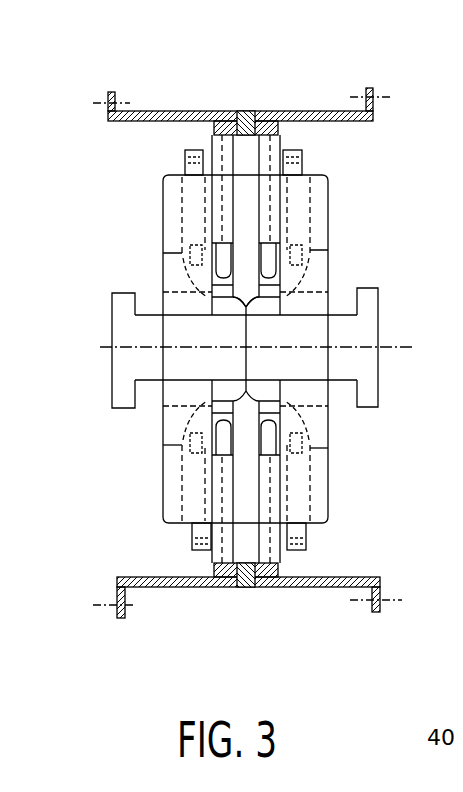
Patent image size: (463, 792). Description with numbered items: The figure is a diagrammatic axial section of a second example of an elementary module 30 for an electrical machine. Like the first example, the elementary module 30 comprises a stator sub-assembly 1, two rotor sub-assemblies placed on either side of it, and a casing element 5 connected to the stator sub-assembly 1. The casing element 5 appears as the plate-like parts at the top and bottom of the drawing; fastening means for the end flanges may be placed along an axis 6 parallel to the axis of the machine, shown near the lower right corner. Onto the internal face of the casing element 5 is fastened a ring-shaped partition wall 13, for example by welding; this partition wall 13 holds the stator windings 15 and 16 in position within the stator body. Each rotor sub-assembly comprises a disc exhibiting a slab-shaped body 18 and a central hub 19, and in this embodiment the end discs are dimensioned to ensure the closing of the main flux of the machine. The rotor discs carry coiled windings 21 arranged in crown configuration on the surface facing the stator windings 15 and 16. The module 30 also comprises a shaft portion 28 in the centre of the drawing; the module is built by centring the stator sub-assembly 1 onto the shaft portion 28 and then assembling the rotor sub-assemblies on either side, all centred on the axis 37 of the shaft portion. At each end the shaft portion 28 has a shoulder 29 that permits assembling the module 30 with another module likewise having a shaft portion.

The stator sub-assembly 1 is at (245, 91).
The casing element 5 is at (272, 600).
The axis 6 is at (390, 602).
The partition wall 13 is at (246, 588).
The stator winding 15 is at (216, 553).
The stator winding 16 is at (280, 552).
The slab-shaped body 18 is at (176, 490).
The central hub 19 is at (263, 301).
The coiled winding 21 is at (302, 155).
The shaft portion 28 is at (394, 288).
The shoulder 29 is at (122, 410).
The elementary module 30 is at (203, 263).
The axis of the shaft portion 37 is at (410, 349).